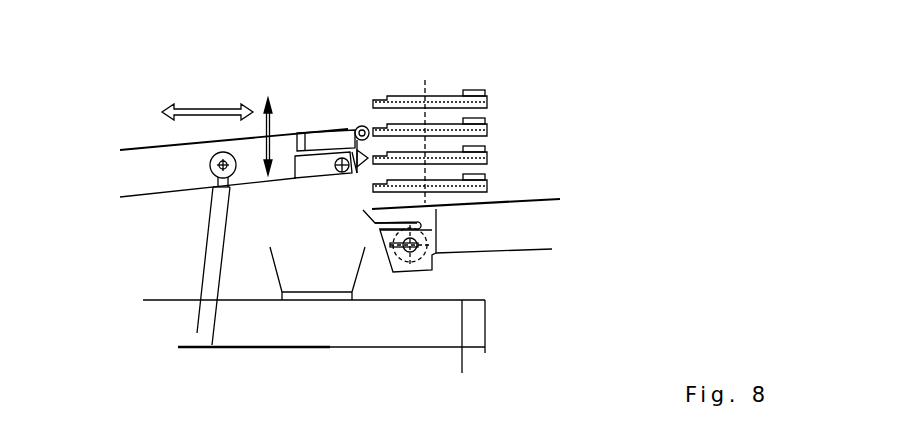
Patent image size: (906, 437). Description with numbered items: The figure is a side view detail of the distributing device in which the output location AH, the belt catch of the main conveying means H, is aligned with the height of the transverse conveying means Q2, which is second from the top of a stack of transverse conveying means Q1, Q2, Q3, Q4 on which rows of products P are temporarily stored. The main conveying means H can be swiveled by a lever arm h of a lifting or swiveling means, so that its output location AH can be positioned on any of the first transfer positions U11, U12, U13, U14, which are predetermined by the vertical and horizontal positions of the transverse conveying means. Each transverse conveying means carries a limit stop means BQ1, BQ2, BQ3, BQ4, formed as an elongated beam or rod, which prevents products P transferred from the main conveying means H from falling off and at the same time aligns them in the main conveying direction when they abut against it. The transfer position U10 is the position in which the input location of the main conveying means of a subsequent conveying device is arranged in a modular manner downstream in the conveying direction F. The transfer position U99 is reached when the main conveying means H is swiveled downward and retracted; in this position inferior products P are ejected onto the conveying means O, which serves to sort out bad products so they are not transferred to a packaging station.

The main conveying means H is at (175, 162).
The lever arm h is at (212, 245).
The conveying direction F is at (217, 130).
The output location AH is at (356, 128).
The product P is at (417, 97).
The transverse conveying means Q4 is at (452, 102).
The limit stop means BQ4 is at (477, 90).
The transverse conveying means Q3 is at (487, 130).
The limit stop means BQ3 is at (483, 120).
The transverse conveying means Q2 is at (484, 158).
The limit stop means BQ2 is at (480, 146).
The transverse conveying means Q1 is at (485, 186).
The limit stop means BQ1 is at (485, 177).
The first transfer position U14 is at (363, 86).
The first transfer position U13 is at (363, 114).
The first transfer position U12 is at (358, 169).
The first transfer position U11 is at (360, 197).
The transfer position U10 is at (356, 222).
The transfer position U99 is at (274, 235).
The conveying means O is at (332, 293).